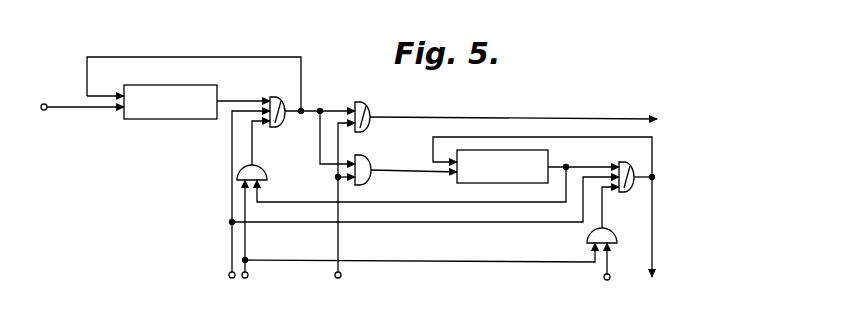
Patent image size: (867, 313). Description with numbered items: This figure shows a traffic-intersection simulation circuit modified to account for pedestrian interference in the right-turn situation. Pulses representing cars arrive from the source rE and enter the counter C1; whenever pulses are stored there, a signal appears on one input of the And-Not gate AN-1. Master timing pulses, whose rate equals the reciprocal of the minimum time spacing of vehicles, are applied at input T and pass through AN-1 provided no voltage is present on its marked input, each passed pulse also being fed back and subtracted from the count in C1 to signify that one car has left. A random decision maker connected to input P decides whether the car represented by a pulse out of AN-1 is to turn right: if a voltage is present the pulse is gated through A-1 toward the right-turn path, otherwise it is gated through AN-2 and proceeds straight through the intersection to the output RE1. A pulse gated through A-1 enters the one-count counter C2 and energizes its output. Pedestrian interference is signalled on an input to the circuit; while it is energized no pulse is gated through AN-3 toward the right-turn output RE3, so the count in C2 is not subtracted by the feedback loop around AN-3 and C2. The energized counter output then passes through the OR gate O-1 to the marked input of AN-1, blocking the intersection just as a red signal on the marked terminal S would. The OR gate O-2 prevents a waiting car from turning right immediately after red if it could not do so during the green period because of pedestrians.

The counter C1 is at (170, 102).
The counter C2 is at (502, 166).
The And-Not gate AN-1 is at (288, 120).
The And-Not gate AN-2 is at (377, 123).
The And-Not gate AN-3 is at (621, 186).
The And gate A-1 is at (370, 177).
The OR gate O-1 is at (264, 176).
The OR gate O-2 is at (612, 244).
The source rE is at (82, 120).
The input T is at (422, 205).
The marked terminal S is at (418, 240).
The input P is at (470, 211).
The output RE1 is at (520, 101).
The output RE3 is at (658, 241).